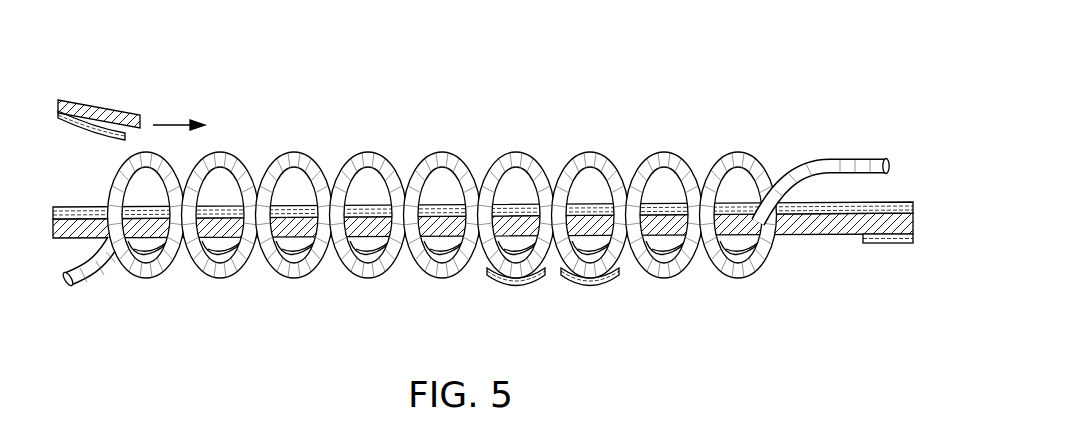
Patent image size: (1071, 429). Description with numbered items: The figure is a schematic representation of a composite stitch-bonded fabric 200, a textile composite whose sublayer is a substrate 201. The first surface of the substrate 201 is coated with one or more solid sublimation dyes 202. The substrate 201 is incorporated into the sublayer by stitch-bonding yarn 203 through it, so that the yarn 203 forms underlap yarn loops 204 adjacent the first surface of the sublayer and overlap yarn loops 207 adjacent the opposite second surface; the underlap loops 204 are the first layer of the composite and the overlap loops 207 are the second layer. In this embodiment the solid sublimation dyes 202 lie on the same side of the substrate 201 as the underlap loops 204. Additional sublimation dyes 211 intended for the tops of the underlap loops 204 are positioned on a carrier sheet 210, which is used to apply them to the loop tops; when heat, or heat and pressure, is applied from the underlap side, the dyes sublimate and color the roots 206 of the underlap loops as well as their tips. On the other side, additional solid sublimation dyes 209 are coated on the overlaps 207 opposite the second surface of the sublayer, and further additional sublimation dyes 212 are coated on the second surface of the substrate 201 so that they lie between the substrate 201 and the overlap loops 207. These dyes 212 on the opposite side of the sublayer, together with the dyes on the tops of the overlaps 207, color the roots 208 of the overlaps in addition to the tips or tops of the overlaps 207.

The composite stitch-bonded fabric 200 is at (475, 177).
The substrate 201 is at (62, 240).
The solid sublimation dyes 202 is at (895, 200).
The yarn 203 is at (475, 219).
The underlap yarn loops 204 is at (367, 155).
The roots of the underlap loops 206 is at (106, 202).
The overlap yarn loops 207 is at (367, 280).
The roots of the overlaps 208 is at (590, 252).
The additional solid sublimation dyes 209 is at (514, 288).
The carrier sheet 210 is at (105, 103).
The additional sublimation dyes 211 is at (58, 110).
The additional sublimation dyes 212 is at (888, 244).